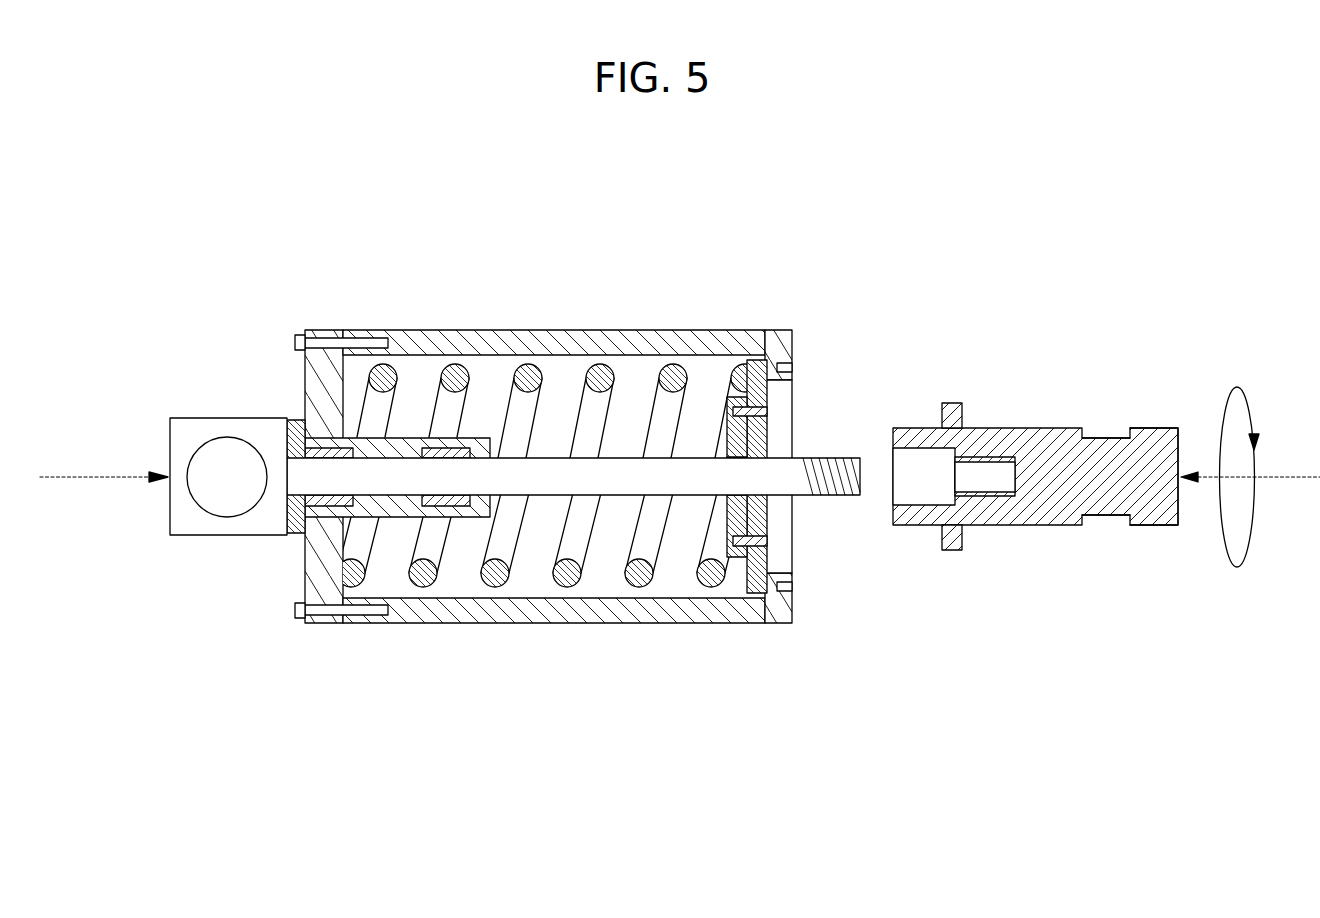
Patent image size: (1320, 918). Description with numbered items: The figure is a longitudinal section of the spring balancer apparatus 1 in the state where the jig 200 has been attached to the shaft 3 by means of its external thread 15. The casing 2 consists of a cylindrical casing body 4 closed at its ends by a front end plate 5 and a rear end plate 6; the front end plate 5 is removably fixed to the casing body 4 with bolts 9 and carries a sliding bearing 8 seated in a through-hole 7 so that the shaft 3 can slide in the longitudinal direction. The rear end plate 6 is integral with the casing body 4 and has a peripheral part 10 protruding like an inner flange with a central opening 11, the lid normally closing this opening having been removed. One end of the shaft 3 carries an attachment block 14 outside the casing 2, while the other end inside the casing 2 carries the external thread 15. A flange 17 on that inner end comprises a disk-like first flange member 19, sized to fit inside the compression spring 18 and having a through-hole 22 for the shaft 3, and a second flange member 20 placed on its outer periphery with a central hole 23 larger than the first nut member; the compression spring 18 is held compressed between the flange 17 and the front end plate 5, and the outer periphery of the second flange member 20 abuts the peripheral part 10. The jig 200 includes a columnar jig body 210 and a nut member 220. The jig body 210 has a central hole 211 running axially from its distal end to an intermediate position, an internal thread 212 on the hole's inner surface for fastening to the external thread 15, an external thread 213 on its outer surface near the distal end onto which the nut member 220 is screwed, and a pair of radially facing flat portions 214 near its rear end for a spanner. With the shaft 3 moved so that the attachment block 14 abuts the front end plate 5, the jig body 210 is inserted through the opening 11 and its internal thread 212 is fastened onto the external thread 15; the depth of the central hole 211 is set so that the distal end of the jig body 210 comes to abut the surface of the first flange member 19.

The actuator 1 is at (463, 456).
The casing 2 is at (558, 423).
The shaft 3 is at (573, 519).
The cylindrical casing body 4 is at (602, 330).
The front end plate 5 is at (305, 378).
The rear end plate 6 is at (826, 452).
The through-hole 7 is at (337, 503).
The sliding bearing 8 is at (297, 528).
The bolts 9 is at (295, 340).
The peripheral part 10 is at (793, 350).
The central opening 11 is at (794, 584).
The attachment block 14 is at (170, 444).
The external thread 15 is at (826, 456).
The flange 17 is at (720, 440).
The compression spring 18 is at (504, 580).
The first flange member 19 is at (727, 530).
The second flange member 20 is at (750, 594).
The through-hole 22 is at (745, 460).
The central hole 23 is at (766, 518).
The jig 200 is at (1106, 434).
The jig body 210 is at (1072, 420).
The central hole 211 is at (908, 493).
The internal thread 212 is at (997, 488).
The external thread 213 is at (1000, 526).
The flat portions 214 is at (1110, 526).
The nut member 220 is at (948, 403).